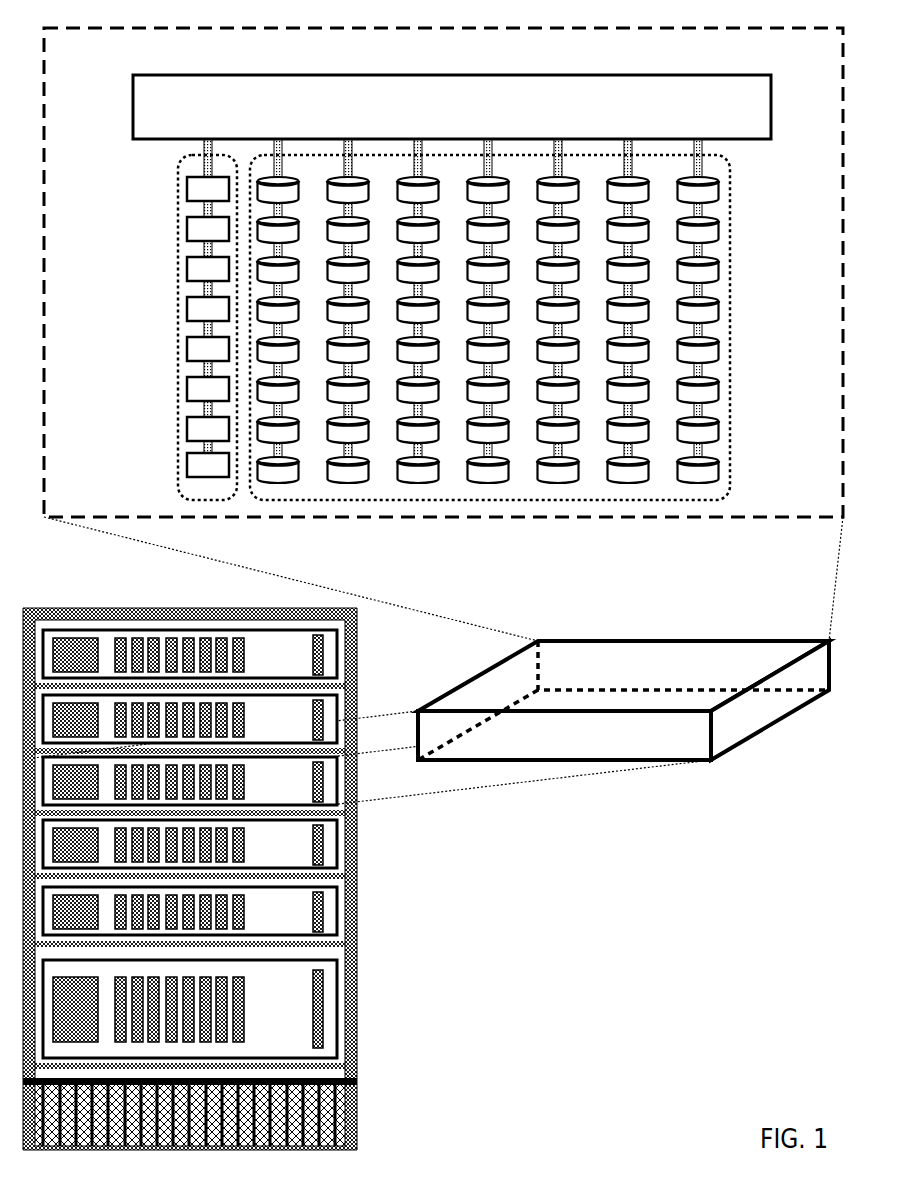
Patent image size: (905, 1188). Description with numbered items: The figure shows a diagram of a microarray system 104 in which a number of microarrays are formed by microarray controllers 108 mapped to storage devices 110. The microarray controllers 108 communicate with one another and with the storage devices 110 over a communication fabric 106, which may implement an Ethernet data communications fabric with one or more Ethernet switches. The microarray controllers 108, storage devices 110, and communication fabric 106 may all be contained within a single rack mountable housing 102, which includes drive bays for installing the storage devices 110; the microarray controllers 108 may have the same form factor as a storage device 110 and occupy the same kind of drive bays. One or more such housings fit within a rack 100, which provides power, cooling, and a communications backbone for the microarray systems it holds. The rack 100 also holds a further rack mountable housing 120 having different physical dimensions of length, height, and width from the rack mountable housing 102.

The rack 100 is at (352, 940).
The rack mountable housing 102 is at (765, 730).
The microarray system 104 is at (443, 272).
The communication fabric 106 is at (452, 107).
The microarray controllers 108 is at (225, 500).
The storage devices 110 is at (527, 500).
The rack mountable housing 120 is at (335, 1020).